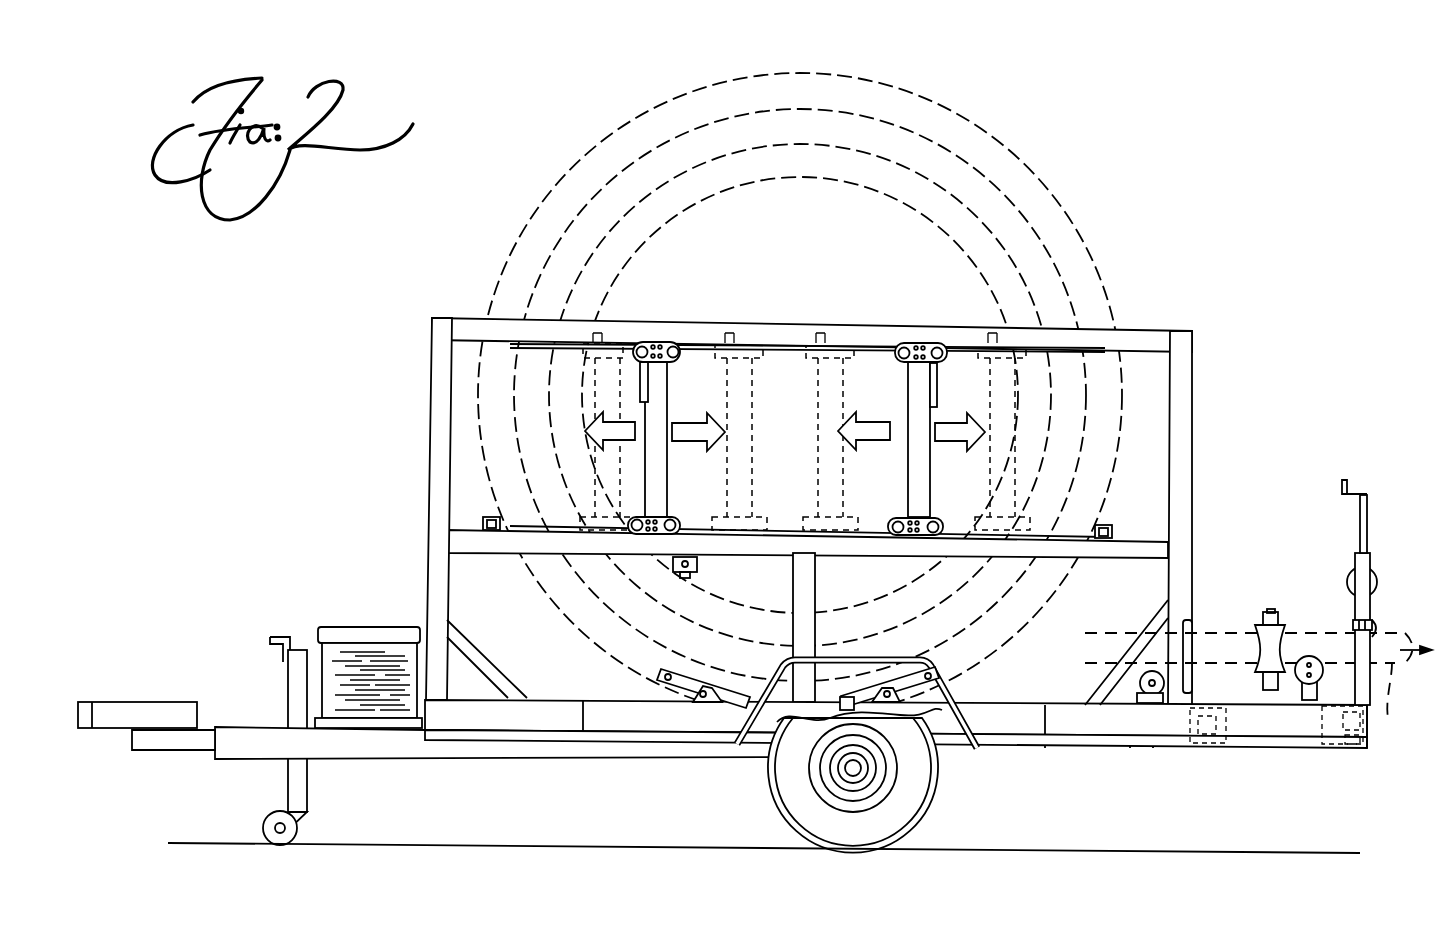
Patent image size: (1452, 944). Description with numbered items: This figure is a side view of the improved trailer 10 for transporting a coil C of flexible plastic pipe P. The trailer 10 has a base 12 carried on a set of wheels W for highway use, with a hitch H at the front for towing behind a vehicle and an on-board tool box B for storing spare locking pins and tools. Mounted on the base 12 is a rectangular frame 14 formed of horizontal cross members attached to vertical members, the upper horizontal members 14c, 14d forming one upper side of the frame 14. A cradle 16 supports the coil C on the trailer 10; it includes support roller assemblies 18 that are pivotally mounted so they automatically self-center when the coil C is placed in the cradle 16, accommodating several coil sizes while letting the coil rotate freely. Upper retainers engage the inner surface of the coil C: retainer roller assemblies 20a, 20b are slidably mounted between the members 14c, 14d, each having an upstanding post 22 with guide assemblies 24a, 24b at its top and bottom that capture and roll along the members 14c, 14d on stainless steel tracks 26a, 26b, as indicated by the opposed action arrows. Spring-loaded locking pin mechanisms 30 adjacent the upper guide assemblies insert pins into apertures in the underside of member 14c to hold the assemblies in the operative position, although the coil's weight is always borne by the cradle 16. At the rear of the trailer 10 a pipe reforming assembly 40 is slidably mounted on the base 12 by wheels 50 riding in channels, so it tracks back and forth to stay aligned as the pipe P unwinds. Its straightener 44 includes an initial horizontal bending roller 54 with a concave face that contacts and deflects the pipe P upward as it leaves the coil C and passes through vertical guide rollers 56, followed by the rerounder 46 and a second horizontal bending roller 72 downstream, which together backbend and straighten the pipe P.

The trailer 10 is at (755, 485).
The base 12 is at (1098, 750).
The frame 14 is at (1200, 466).
The upper horizontal member 14c is at (432, 332).
The upper horizontal member 14d is at (452, 532).
The cradle 16 is at (605, 678).
The support roller assembly 18 is at (681, 692).
The retainer roller assembly 20a is at (687, 383).
The retainer roller assembly 20b is at (912, 378).
The upstanding post 22 is at (653, 492).
The guide assembly 24a is at (674, 345).
The guide assembly 24b is at (900, 345).
The stainless steel track 26a is at (1082, 530).
The stainless steel track 26b is at (1060, 357).
The spring-loaded locking pin mechanism 30 is at (648, 383).
The pipe reforming assembly 40 is at (1258, 622).
The straightener 44 is at (1270, 680).
The rerounder 46 is at (1385, 617).
The wheel 50 is at (1367, 738).
The initial horizontal bending roller 54 is at (1150, 672).
The vertical guide roller 56 is at (1190, 680).
The second horizontal bending roller 72 is at (1320, 680).
The tool box B is at (356, 630).
The coil C is at (1042, 146).
The hitch H is at (108, 722).
The pipe P is at (1258, 686).
The wheels W is at (893, 838).